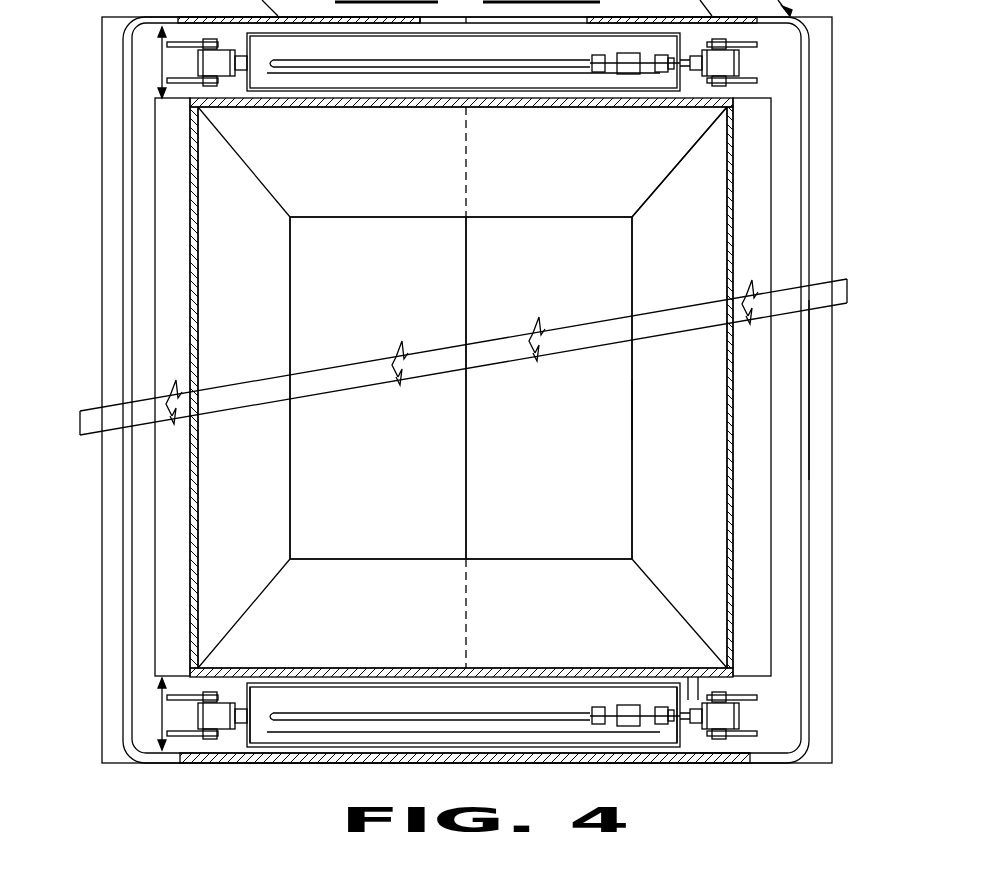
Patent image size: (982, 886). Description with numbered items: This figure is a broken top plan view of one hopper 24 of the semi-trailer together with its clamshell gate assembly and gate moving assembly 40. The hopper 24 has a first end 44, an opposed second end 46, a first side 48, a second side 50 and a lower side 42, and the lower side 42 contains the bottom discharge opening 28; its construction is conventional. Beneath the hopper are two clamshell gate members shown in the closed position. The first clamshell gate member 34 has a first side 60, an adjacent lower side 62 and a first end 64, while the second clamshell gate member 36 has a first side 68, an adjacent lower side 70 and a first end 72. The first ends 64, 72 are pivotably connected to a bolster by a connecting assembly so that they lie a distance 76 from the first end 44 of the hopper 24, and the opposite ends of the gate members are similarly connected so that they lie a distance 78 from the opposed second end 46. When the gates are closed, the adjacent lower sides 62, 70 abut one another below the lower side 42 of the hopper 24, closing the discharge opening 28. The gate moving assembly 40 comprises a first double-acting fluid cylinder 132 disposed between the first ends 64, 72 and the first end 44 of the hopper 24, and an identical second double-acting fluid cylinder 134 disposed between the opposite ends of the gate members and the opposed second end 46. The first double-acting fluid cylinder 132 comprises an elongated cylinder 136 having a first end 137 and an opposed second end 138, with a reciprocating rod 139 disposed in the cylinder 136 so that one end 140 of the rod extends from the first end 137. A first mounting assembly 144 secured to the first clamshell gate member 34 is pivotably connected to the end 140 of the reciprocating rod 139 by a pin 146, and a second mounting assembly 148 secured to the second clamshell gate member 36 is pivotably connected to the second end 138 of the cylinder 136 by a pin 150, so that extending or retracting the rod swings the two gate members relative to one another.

The hopper 24 is at (705, 180).
The bottom discharge opening 28 is at (617, 278).
The first clamshell gate member 34 is at (124, 582).
The second clamshell gate member 36 is at (810, 393).
The gate moving assembly 40 is at (466, 677).
The lower side 42 is at (630, 402).
The first end 44 is at (585, 668).
The opposed second end 46 is at (583, 107).
The first side 48 is at (200, 462).
The second side 50 is at (727, 373).
The first side 60 is at (124, 302).
The adjacent lower side 62 is at (387, 455).
The first end 64 is at (292, 762).
The first side 68 is at (812, 335).
The adjacent lower side 70 is at (572, 455).
The first end 72 is at (710, 762).
The distance 76 is at (162, 720).
The distance 78 is at (162, 62).
The first double-acting fluid cylinder 132 is at (322, 702).
The second double-acting fluid cylinder 134 is at (386, 76).
The elongated cylinder 136 is at (530, 711).
The first end 137 is at (263, 735).
The opposed second end 138 is at (675, 722).
The reciprocating rod 139 is at (242, 706).
The end 140 is at (182, 703).
The first mounting assembly 144 is at (183, 736).
The pin 146 is at (207, 692).
The second mounting assembly 148 is at (740, 697).
The pin 150 is at (719, 690).